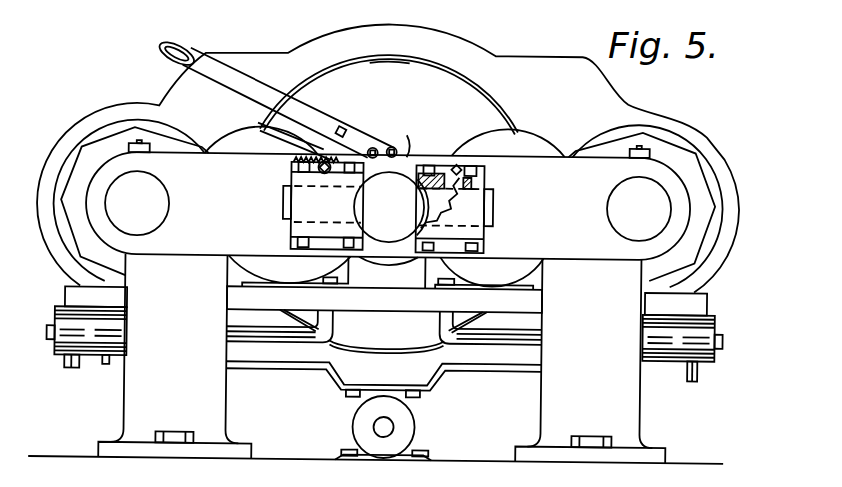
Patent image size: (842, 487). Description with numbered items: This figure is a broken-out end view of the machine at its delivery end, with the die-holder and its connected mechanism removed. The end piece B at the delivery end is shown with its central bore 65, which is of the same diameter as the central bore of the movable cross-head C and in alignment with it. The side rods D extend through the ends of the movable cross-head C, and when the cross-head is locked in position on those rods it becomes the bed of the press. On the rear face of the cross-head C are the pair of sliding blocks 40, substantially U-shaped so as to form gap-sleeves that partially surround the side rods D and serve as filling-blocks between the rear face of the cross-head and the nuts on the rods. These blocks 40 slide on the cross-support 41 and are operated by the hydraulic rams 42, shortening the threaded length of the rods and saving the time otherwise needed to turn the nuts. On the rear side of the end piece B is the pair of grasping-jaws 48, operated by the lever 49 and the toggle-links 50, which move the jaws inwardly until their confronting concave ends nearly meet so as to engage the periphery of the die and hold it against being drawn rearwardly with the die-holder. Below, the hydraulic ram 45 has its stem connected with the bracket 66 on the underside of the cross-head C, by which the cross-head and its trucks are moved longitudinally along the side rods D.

The sliding blocks 40 is at (384, 206).
The cross-support 41 is at (384, 299).
The hydraulic rams 42 is at (105, 358).
The hydraulic ram 45 is at (418, 423).
The grasping-jaws 48 is at (282, 203).
The lever 49 is at (266, 89).
The toggle-links 50 is at (373, 148).
The central bore 65 is at (389, 207).
The bracket 66 is at (354, 395).
The end piece B is at (388, 206).
The movable cross-head C is at (389, 94).
The side rods D is at (388, 206).